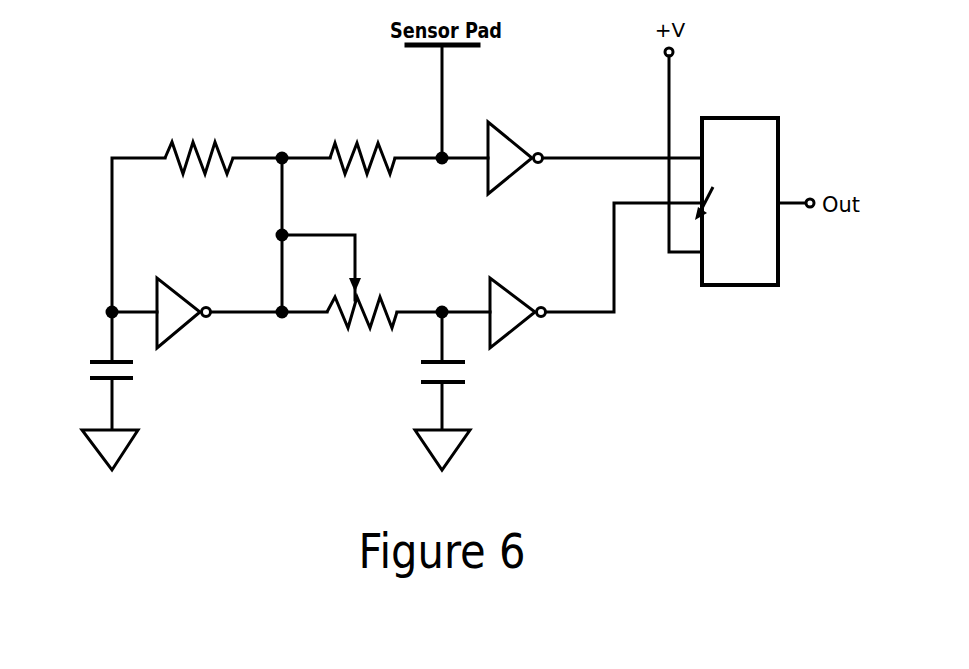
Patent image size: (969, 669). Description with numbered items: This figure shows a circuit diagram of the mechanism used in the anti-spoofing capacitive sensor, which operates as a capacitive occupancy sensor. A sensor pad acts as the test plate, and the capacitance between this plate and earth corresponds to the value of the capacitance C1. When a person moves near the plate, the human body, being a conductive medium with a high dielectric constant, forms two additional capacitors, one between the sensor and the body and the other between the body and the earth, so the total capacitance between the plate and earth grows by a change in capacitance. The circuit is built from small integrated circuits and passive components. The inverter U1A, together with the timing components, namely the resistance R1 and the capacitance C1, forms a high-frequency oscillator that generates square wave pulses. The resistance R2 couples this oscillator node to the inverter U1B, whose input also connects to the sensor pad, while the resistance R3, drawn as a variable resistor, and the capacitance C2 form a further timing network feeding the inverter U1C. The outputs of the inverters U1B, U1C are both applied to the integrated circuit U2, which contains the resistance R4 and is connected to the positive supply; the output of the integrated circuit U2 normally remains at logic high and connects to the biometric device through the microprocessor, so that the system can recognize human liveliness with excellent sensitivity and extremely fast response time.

The resistance R1 is at (199, 142).
The resistance R2 is at (362, 142).
The resistance R3 is at (362, 290).
The resistance R4 is at (717, 185).
The capacitance C1 is at (95, 391).
The capacitance C2 is at (426, 391).
The inverter U1A is at (198, 327).
The inverter U1B is at (525, 167).
The inverter U1C is at (527, 321).
The integrated circuit U2 is at (740, 220).